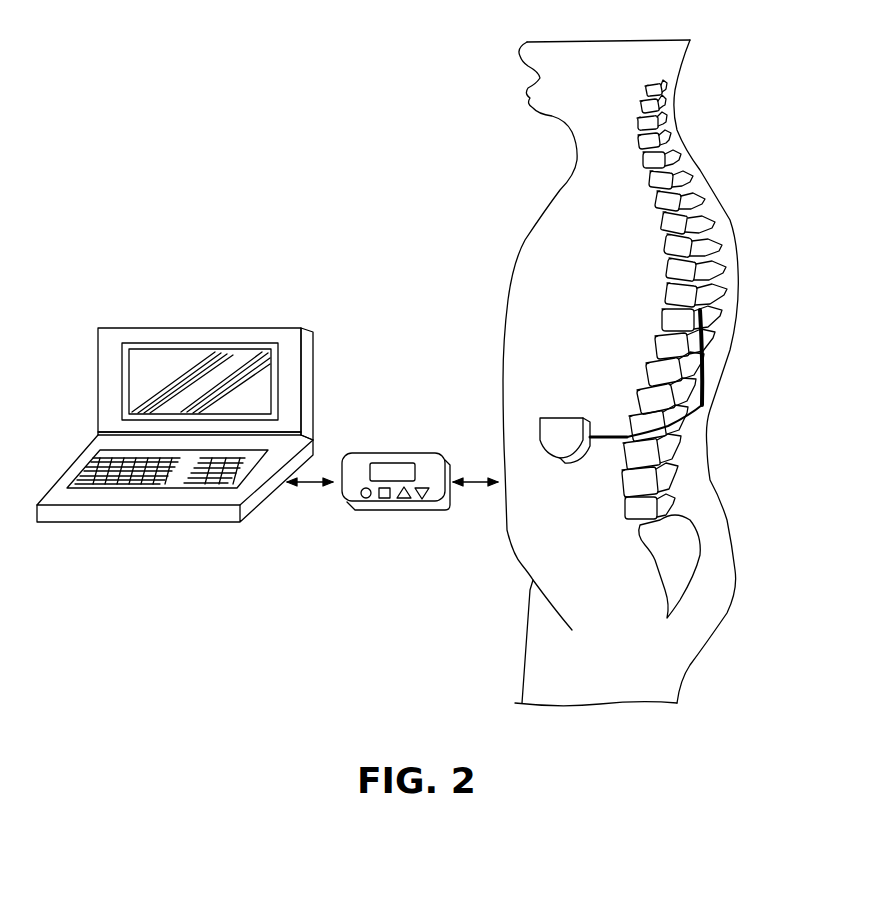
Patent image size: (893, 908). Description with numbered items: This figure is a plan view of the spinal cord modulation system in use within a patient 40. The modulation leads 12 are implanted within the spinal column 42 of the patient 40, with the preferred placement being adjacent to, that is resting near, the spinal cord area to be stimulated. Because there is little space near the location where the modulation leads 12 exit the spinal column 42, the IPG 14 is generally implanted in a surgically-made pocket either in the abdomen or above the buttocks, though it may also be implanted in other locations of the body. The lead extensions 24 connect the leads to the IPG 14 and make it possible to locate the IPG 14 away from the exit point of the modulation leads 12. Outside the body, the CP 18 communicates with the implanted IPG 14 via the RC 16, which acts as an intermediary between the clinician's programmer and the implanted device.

The modulation leads 12 is at (702, 325).
The IPG 14 is at (563, 450).
The RC 16 is at (415, 440).
The CP 18 is at (188, 325).
The lead extensions 24 is at (710, 403).
The patient 40 is at (515, 255).
The spinal column 42 is at (657, 307).